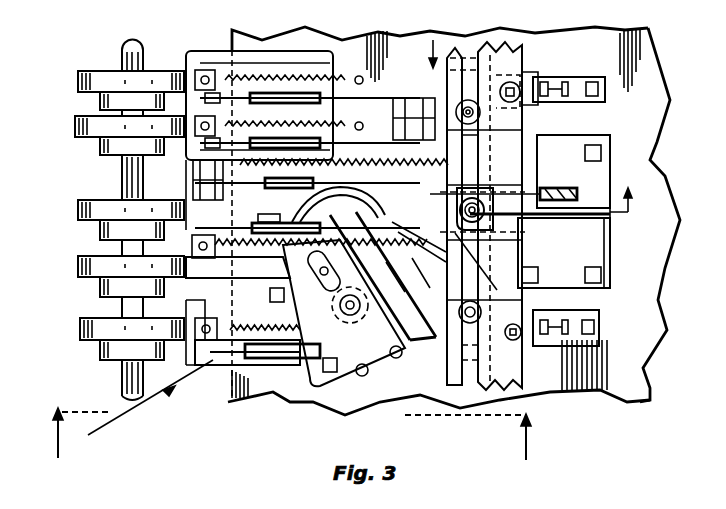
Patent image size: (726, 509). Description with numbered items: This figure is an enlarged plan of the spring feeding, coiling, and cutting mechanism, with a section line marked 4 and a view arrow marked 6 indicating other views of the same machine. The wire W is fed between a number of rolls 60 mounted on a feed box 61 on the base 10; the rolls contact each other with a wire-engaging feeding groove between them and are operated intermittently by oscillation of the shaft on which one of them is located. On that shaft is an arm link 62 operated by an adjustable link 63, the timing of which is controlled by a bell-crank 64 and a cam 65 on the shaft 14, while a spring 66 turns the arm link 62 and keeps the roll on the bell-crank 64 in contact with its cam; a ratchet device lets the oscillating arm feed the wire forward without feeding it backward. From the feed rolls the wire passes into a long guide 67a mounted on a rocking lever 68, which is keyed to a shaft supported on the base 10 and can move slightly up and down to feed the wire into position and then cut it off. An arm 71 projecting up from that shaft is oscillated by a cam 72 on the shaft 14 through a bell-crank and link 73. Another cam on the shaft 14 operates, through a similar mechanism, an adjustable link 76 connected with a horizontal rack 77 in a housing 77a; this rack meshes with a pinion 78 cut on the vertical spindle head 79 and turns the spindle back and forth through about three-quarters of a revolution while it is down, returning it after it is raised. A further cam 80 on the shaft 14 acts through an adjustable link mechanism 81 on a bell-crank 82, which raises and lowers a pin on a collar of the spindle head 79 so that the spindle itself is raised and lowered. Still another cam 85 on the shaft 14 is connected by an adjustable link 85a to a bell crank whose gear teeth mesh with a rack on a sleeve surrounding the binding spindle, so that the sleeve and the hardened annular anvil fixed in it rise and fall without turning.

The base 10 is at (660, 180).
The shaft 14 is at (137, 45).
The cam 72 is at (104, 78).
The cam 80 is at (76, 127).
The bell-crank and link 73 is at (78, 211).
The cam 85 is at (78, 267).
The cam 65 is at (80, 329).
The adjustable link mechanism 81 is at (382, 92).
The arm 71 is at (470, 212).
The rocking lever 68 is at (445, 86).
The bell-crank 82 is at (512, 185).
The horizontal rack 77 is at (563, 190).
The housing 77a is at (597, 247).
The vertical spindle head 79 is at (522, 243).
The view direction arrow 6 is at (622, 212).
The adjustable link 76 is at (300, 220).
The adjustable link 85a is at (268, 206).
The feed rolls 60 is at (312, 300).
The spring 66 is at (248, 326).
The long guide 67a is at (395, 284).
The pinion 78 is at (450, 252).
The arm link 62 is at (410, 322).
The feed box 61 is at (406, 366).
The bell-crank 64 is at (206, 352).
The adjustable link 63 is at (276, 362).
The wire W is at (140, 408).
The section line 4- 4 is at (290, 434).